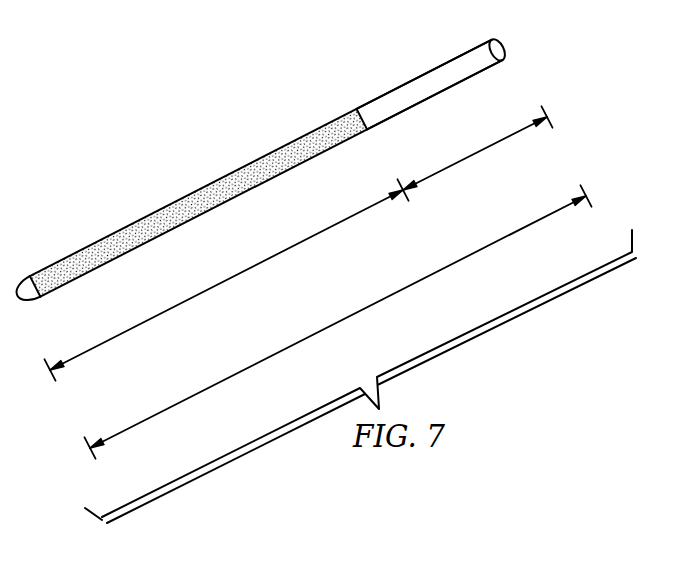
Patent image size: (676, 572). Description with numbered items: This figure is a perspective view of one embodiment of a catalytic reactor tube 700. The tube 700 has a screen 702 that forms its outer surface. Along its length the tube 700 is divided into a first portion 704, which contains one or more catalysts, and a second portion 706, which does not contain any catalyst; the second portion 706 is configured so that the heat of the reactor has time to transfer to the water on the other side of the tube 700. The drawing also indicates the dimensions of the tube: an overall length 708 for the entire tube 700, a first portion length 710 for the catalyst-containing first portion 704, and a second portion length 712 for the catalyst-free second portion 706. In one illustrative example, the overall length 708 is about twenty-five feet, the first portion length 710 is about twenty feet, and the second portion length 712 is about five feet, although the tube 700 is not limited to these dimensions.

The catalytic reactor tube 700 is at (153, 32).
The screen 702 is at (294, 168).
The first portion 704 is at (198, 203).
The second portion 706 is at (506, 52).
The overall length 708 is at (388, 298).
The first portion length 710 is at (225, 281).
The second portion length 712 is at (475, 153).